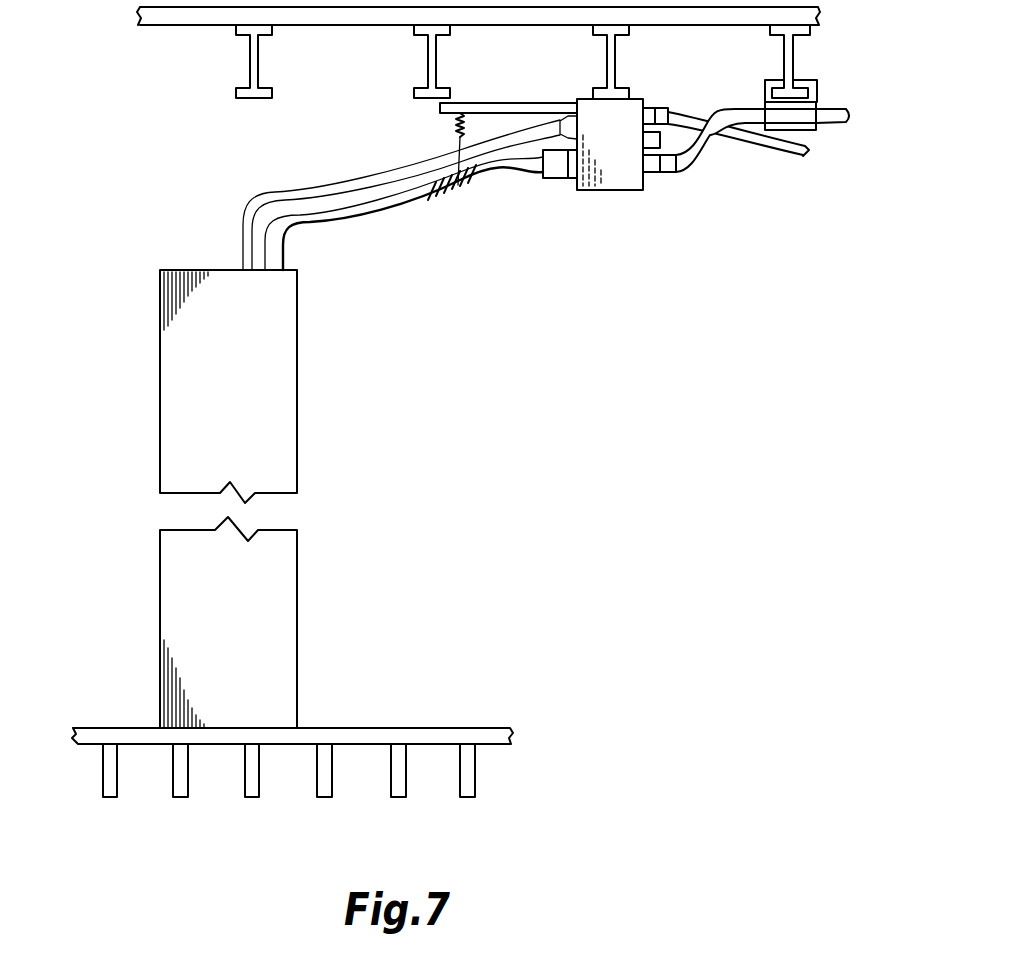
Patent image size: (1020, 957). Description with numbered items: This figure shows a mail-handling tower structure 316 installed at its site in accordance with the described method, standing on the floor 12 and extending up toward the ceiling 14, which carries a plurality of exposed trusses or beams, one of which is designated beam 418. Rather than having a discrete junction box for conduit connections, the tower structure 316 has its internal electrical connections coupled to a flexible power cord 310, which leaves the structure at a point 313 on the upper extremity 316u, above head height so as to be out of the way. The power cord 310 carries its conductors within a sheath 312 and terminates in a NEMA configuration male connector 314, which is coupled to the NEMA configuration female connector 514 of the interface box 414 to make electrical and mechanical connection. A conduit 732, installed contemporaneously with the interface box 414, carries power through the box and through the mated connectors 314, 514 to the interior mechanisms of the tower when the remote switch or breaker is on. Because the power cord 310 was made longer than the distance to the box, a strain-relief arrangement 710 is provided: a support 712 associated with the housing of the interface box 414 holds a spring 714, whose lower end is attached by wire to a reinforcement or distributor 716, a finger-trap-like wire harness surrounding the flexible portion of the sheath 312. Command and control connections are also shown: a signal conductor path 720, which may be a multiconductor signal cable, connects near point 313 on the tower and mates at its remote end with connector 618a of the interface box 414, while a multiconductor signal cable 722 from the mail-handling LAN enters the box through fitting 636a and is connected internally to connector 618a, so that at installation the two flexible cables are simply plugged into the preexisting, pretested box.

The ceiling 14 is at (128, 7).
The base / floor structure 12 is at (62, 727).
The tower structure 316 is at (160, 348).
The upper extremity of the tower structure 316u is at (193, 270).
The point of coupling of power cord 313 is at (290, 270).
The sheath 312 is at (406, 211).
The signal conductor path 720 is at (318, 194).
The reinforcement or distributor 716 is at (464, 188).
The spring 714 is at (457, 131).
The support 712 is at (508, 87).
The cable support assembly 710 is at (401, 128).
The flexible power cord 310 is at (508, 222).
The beam 418 is at (606, 64).
The NEMA configuration male connector 314 is at (553, 179).
The NEMA configuration female connector 514 is at (577, 182).
The connector of interface box 618a is at (570, 125).
The fitting 636a is at (656, 106).
The interface box 414 is at (646, 186).
The multiconductor signal cable 722 is at (779, 151).
The conduit 732 is at (826, 108).